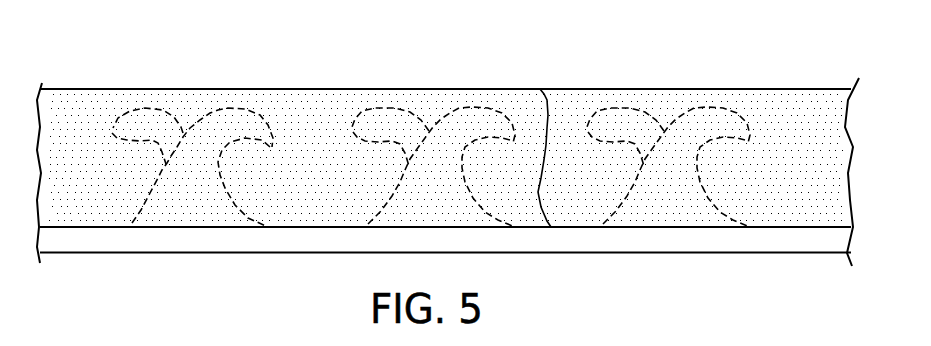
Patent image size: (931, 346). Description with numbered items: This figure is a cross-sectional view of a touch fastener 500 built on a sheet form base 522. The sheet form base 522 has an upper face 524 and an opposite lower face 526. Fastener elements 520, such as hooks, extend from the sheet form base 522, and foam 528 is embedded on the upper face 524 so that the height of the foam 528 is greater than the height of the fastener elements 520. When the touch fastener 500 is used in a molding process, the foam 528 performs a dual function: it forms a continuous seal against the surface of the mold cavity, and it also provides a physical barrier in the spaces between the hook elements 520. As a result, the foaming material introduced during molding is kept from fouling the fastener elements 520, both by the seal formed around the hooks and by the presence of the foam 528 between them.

The touch fastener 500 is at (308, 58).
The fastener elements 520 is at (703, 105).
The sheet form base 522 is at (795, 242).
The upper face 524 is at (540, 89).
The lower face 526 is at (223, 253).
The foam 528 is at (805, 114).